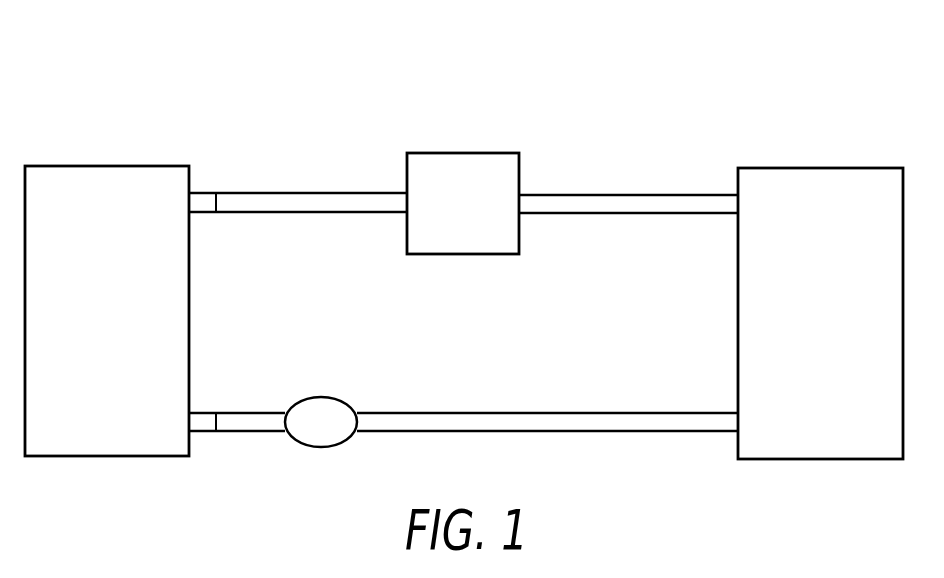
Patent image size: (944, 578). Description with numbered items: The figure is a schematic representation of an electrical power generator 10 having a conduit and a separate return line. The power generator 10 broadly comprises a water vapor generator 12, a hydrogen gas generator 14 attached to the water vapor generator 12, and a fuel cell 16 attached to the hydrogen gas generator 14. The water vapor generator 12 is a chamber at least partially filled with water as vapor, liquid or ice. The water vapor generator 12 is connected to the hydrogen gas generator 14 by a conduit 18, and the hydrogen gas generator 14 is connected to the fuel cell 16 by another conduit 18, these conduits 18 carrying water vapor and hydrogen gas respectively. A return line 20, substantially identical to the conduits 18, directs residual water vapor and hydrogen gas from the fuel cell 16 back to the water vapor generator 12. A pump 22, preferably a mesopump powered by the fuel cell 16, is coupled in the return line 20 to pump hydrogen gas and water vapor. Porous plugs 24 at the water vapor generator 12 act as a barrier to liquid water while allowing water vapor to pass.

The electrical power generator 10 is at (775, 47).
The water vapor generator 12 is at (106, 167).
The hydrogen gas generator 14 is at (464, 152).
The fuel cell 16 is at (821, 167).
The conduit 18 is at (314, 192).
The return line 20 is at (545, 412).
The pump 22 is at (322, 396).
The porous plug 24 is at (202, 191).